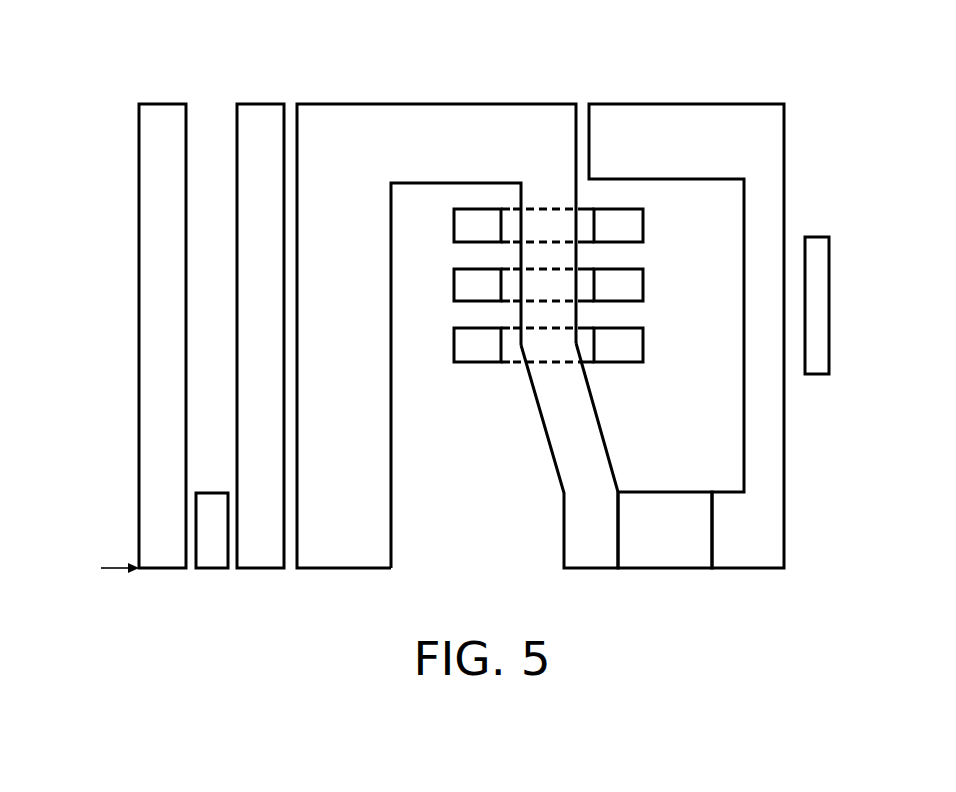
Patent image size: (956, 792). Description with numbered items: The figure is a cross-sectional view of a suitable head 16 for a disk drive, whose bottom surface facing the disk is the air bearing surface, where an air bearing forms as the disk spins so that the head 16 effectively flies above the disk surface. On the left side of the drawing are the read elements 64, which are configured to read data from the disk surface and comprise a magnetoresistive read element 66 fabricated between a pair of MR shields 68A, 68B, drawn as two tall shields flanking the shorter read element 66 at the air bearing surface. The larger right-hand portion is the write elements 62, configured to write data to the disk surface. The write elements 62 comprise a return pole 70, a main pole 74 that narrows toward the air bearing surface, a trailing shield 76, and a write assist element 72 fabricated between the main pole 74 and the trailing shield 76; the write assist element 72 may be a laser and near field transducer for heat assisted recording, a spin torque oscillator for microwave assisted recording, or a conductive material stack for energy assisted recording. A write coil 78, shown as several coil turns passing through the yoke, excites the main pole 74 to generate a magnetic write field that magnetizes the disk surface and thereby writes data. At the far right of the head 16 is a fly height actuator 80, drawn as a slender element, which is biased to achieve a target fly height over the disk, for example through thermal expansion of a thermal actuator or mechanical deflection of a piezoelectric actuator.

The head 16 is at (106, 149).
The write elements 62 is at (789, 93).
The read elements 64 is at (288, 93).
The magnetoresistive (MR) read element 66 is at (214, 568).
The MR shield 68A is at (160, 568).
The MR shield 68B is at (262, 568).
The return pole 70 is at (346, 568).
The write assist element 72 is at (664, 568).
The main pole 74 is at (587, 568).
The trailing shield 76 is at (749, 568).
The write coil 78 is at (478, 362).
The fly height actuator (FHA) 80 is at (818, 374).